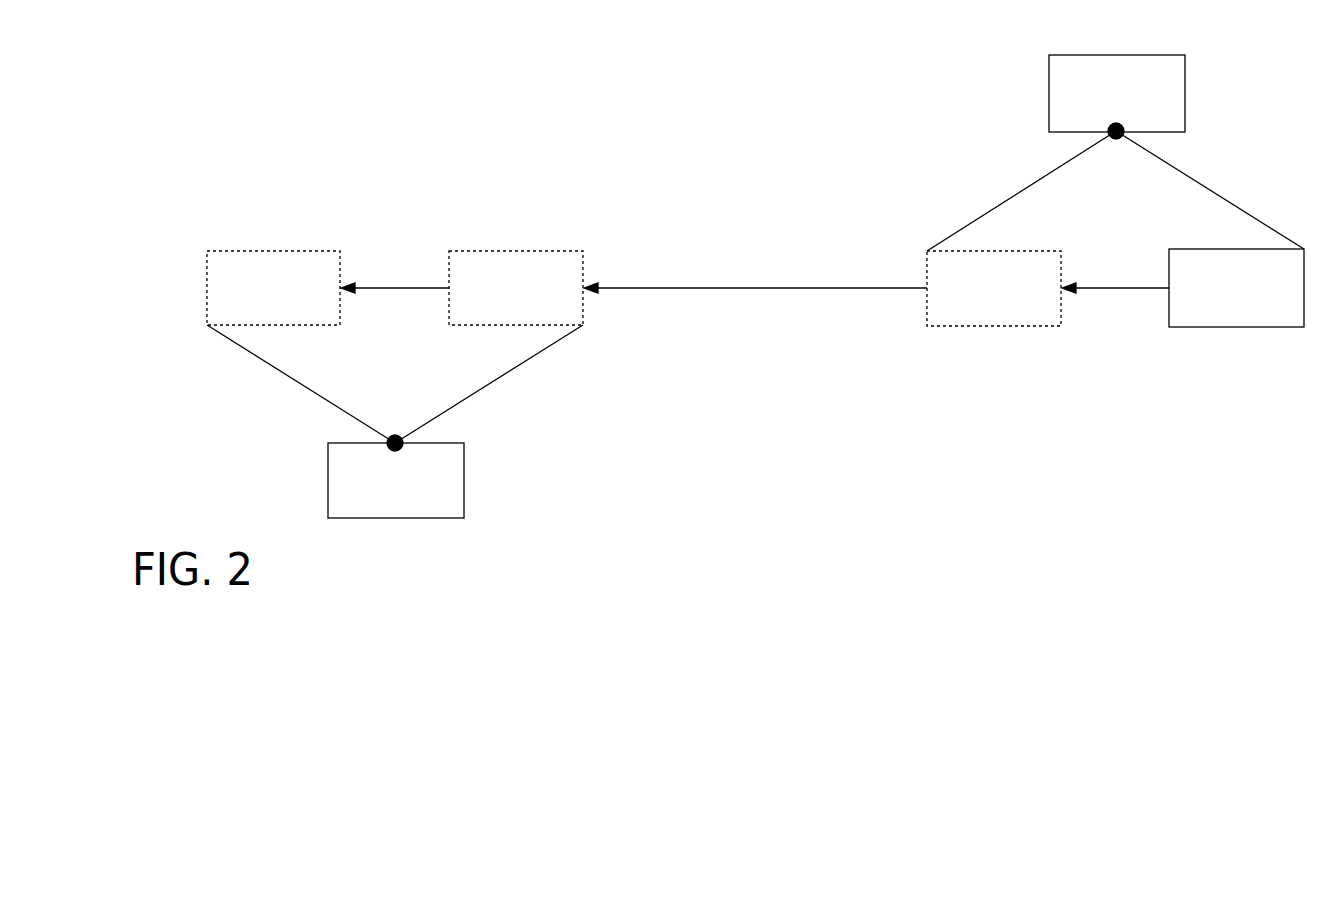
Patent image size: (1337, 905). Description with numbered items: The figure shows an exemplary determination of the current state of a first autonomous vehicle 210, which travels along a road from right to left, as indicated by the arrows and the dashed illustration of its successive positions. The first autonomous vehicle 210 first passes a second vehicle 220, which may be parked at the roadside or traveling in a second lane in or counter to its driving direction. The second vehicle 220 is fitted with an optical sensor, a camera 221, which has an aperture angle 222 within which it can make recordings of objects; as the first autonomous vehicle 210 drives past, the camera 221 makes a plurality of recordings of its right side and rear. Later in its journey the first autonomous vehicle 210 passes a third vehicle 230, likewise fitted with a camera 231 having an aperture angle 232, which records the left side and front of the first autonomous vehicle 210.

The first autonomous vehicle 210 is at (755, 288).
The second vehicle 220 is at (1117, 93).
The camera 221 is at (1116, 141).
The aperture angle 222 is at (996, 206).
The third vehicle 230 is at (396, 480).
The camera 231 is at (395, 435).
The aperture angle 232 is at (501, 378).